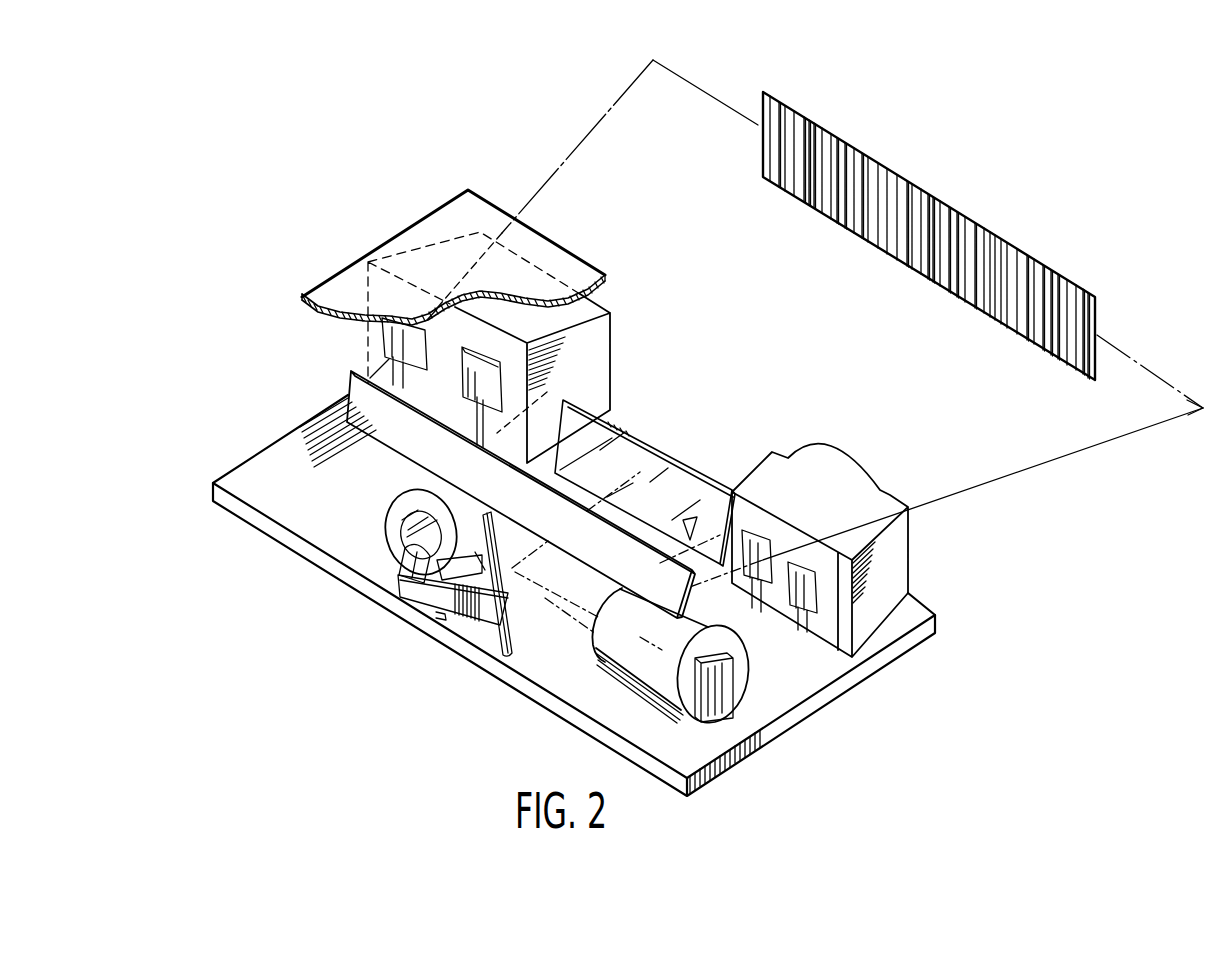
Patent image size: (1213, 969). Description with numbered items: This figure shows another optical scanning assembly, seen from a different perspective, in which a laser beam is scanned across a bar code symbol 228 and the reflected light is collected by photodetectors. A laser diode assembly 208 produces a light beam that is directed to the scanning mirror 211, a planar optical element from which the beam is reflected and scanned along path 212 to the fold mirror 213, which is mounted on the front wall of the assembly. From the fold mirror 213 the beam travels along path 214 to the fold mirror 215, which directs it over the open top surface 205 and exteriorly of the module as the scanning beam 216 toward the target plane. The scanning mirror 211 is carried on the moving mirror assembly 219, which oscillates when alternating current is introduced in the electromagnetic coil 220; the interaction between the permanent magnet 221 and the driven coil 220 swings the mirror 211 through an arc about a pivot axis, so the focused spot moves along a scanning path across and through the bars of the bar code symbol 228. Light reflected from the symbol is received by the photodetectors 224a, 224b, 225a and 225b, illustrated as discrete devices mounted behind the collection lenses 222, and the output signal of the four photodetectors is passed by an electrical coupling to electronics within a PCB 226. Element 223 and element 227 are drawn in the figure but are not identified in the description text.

The open top surface 205 is at (458, 212).
The laser diode assembly 208 is at (620, 660).
The scanning mirror 211 is at (512, 675).
The path 212 is at (705, 555).
The fold mirror 213 is at (637, 455).
The path 214 is at (545, 400).
The fold mirror 215 is at (362, 403).
The scanning beam 216 is at (602, 121).
The moving mirror assembly 219 is at (487, 618).
The electromagnetic coil 220 is at (397, 503).
The permanent magnet 221 is at (400, 565).
The collection lenses 222 is at (833, 455).
The gasket lip 223 is at (497, 297).
The photodetector 224a is at (817, 597).
The photodetector 224b is at (767, 540).
The photodetector 225a is at (397, 253).
The photodetector 225b is at (350, 335).
The PCB 226 is at (733, 765).
The laser connector 227 is at (728, 687).
The bar code symbol 228 is at (970, 287).